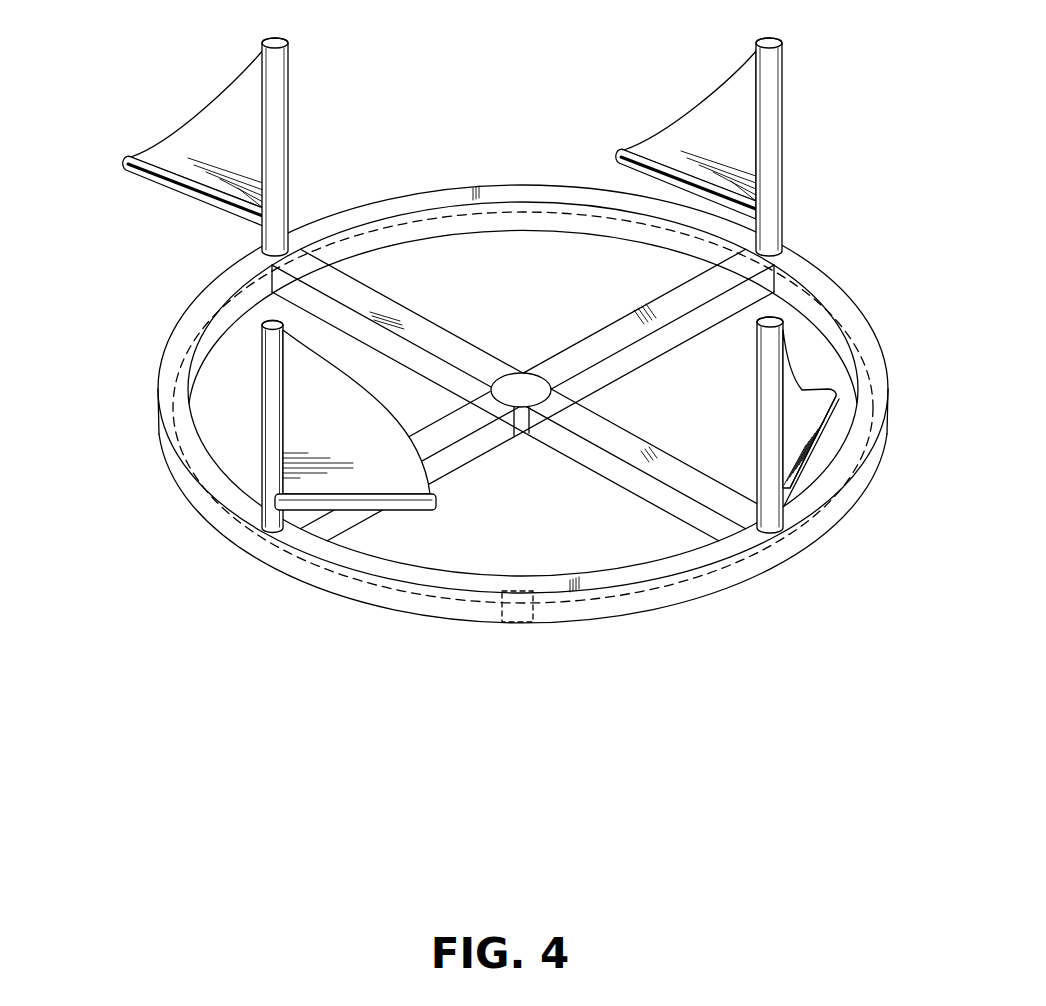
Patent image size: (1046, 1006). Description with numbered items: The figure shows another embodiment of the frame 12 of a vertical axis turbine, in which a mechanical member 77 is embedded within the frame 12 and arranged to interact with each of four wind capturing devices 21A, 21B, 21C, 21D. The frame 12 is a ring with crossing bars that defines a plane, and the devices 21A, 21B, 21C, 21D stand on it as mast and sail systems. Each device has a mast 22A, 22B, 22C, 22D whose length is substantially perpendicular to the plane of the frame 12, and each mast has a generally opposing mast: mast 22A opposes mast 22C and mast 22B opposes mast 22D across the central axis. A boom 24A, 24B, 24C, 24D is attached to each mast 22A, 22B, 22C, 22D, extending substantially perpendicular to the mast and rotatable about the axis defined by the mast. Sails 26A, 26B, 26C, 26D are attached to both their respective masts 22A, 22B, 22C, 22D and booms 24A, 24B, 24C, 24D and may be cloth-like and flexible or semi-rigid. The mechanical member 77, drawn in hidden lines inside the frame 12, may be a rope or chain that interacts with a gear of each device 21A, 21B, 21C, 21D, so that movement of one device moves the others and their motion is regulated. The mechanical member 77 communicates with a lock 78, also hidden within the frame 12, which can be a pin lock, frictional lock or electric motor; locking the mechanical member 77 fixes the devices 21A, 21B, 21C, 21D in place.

The frame 12 is at (469, 622).
The mechanical member 77 is at (610, 602).
The lock 78 is at (523, 623).
The wind capturing device 21A is at (223, 147).
The wind capturing device 21B is at (712, 145).
The wind capturing device 21C is at (802, 420).
The wind capturing device 21D is at (317, 496).
The mast 22A is at (290, 118).
The mast 22B is at (783, 118).
The mast 22C is at (760, 413).
The mast 22D is at (262, 458).
The boom 24A is at (128, 164).
The boom 24B is at (621, 158).
The boom 24C is at (840, 392).
The boom 24D is at (437, 502).
The sail 26A is at (215, 120).
The sail 26B is at (720, 118).
The sail 26C is at (803, 391).
The sail 26D is at (384, 480).